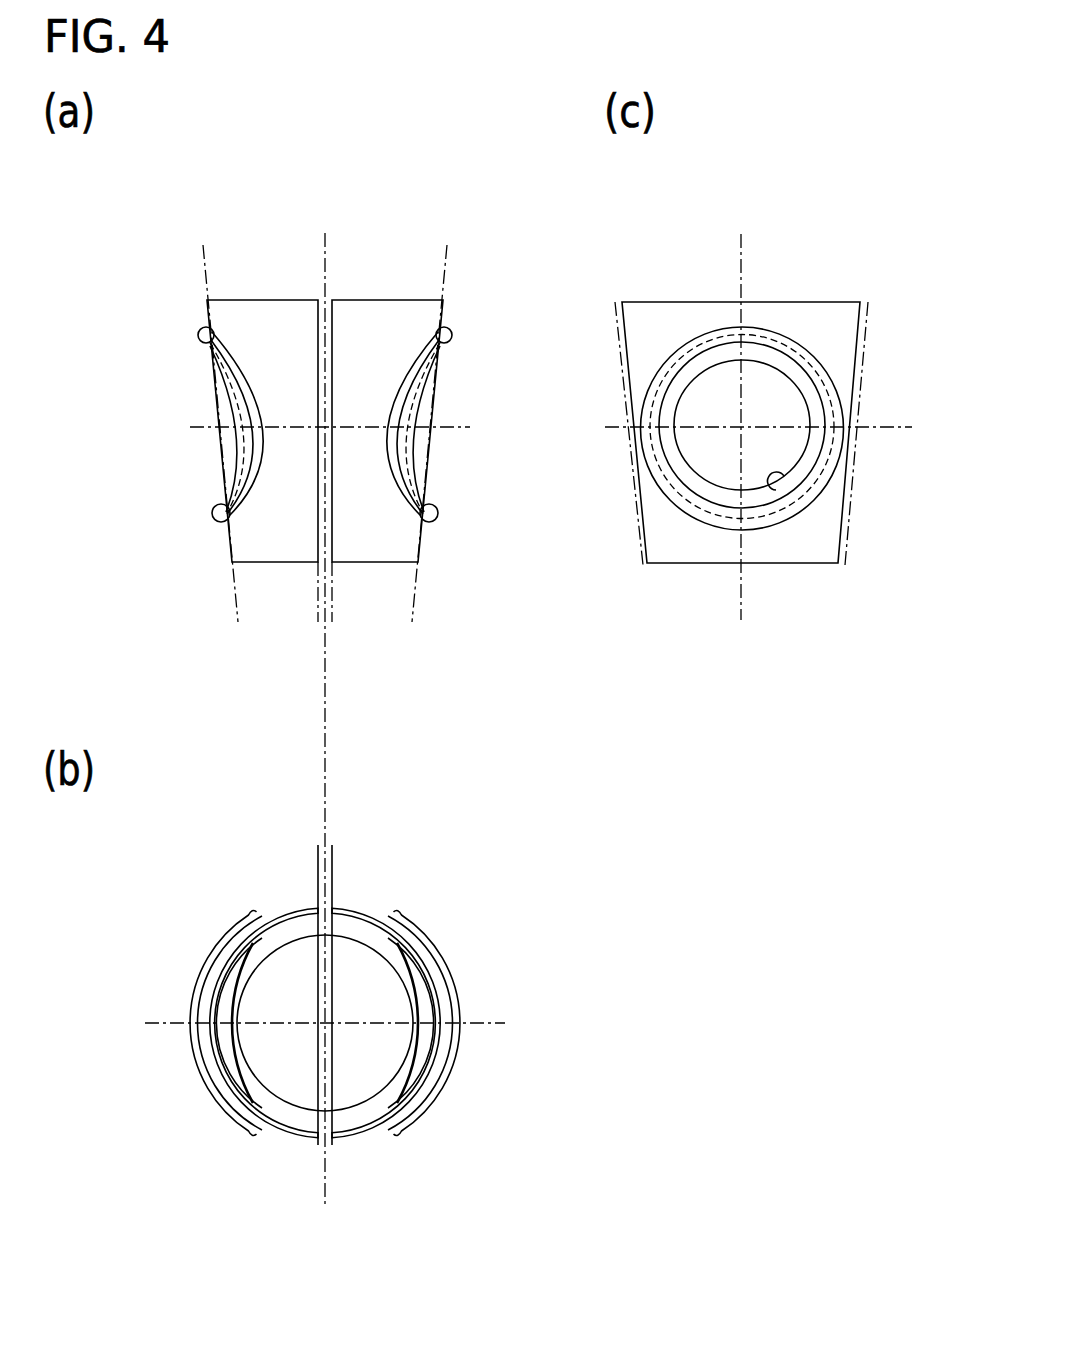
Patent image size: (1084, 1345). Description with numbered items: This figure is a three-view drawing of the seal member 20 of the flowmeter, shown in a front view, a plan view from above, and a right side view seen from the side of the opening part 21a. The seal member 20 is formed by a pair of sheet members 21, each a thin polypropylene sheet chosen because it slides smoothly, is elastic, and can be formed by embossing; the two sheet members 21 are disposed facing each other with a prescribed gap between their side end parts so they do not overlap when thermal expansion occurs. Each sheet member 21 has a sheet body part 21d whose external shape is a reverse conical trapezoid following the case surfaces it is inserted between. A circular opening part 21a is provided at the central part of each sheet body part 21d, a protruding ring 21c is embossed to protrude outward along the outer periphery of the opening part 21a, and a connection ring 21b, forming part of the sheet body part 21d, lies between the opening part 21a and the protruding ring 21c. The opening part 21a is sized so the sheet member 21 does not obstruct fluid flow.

The seal member 20 is at (352, 181).
The sheet member 21 is at (263, 300).
The opening part 21a is at (225, 455).
The connection ring 21b is at (215, 350).
The protruding ring 21c is at (213, 512).
The sheet body part 21d is at (203, 328).